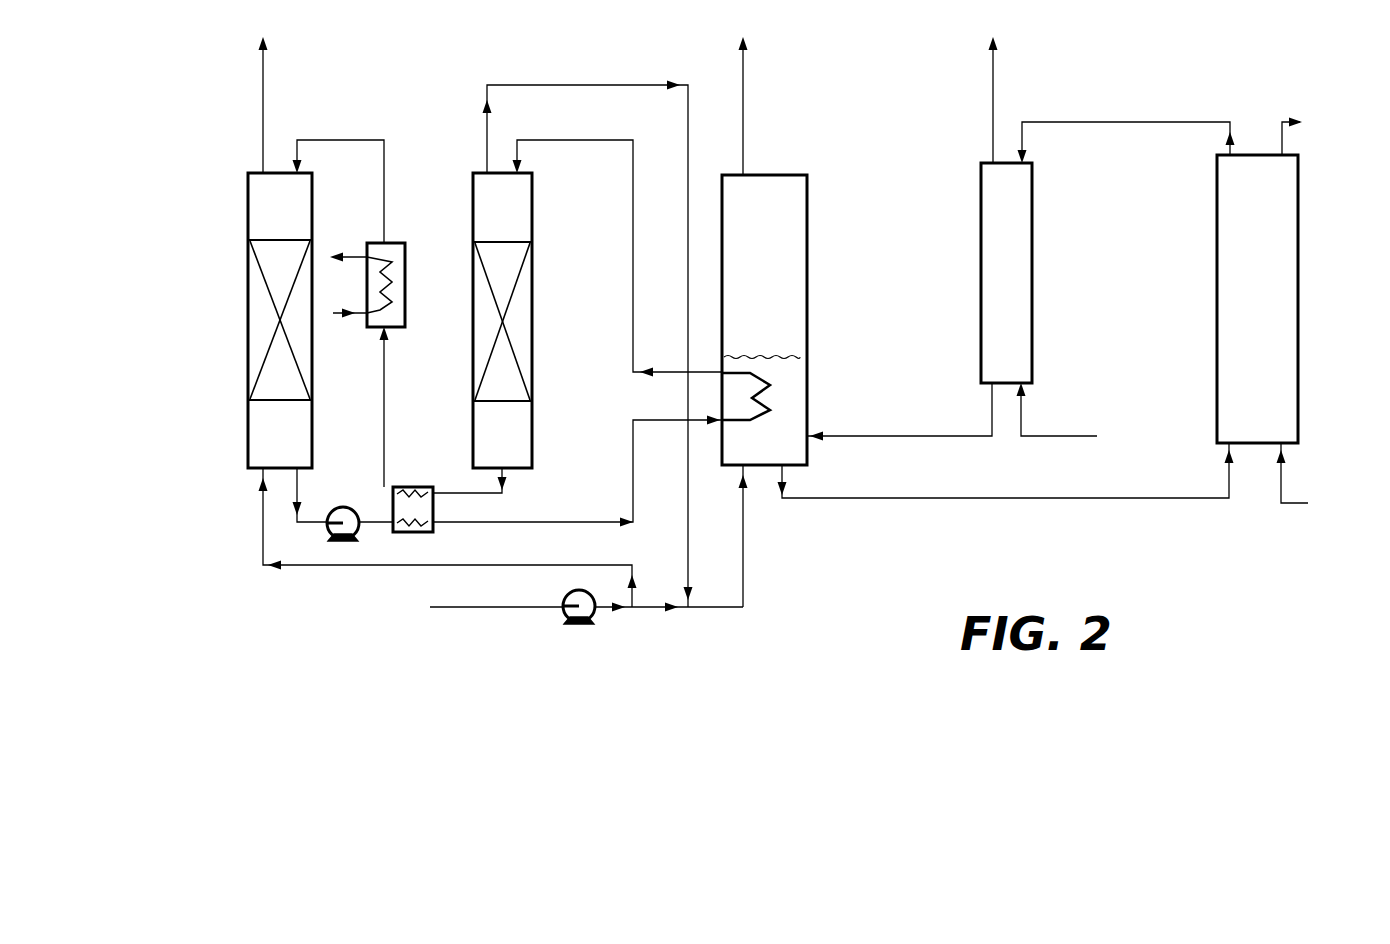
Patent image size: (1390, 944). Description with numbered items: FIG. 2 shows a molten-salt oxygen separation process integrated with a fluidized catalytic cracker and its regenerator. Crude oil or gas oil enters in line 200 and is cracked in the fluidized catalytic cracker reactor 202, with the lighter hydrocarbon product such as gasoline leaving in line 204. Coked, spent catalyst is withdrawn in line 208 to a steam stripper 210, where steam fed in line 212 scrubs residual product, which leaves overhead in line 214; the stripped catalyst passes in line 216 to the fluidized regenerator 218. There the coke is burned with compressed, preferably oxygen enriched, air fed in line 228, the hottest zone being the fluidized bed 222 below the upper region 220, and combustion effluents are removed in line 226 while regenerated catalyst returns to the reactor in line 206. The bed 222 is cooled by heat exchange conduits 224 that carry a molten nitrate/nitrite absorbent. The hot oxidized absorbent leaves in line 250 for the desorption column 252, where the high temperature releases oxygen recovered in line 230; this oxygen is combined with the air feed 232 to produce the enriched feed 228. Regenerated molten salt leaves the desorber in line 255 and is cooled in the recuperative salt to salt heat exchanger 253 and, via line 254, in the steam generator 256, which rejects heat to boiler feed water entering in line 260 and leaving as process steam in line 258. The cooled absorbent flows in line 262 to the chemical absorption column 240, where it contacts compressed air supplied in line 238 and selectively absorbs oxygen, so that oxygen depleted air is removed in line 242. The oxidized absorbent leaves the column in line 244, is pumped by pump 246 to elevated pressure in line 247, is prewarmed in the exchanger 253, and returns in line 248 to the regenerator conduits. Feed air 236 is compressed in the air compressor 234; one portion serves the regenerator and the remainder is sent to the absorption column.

The line 200 is at (1296, 512).
The fluidized catalytic cracker reactor 202 is at (1299, 252).
The line 204 is at (1288, 122).
The line 206 is at (855, 500).
The line 208 is at (1147, 120).
The steam stripper 210 is at (1035, 290).
The line 212 is at (1060, 430).
The line 214 is at (995, 112).
The line 216 is at (984, 442).
The fluidized regenerator 218 is at (808, 330).
The regenerator upper zone 220 is at (784, 291).
The fluidized bed 222 is at (784, 455).
The heat exchange conduits 224 is at (775, 416).
The line 226 is at (745, 120).
The line 228 is at (746, 570).
The line 230 is at (637, 90).
The air feed 232 is at (665, 610).
The air compressor 234 is at (596, 614).
The feed air 236 is at (516, 612).
The line 238 is at (392, 571).
The chemical absorption column 240 is at (247, 364).
The line 242 is at (265, 118).
The line 244 is at (300, 500).
The pump 246 is at (360, 530).
The line 247 is at (378, 519).
The line 248 is at (551, 522).
The line 250 is at (631, 298).
The desorption column 252 is at (534, 343).
The recuperative salt to salt heat exchanger 253 is at (433, 490).
The line 254 is at (389, 440).
The line 255 is at (478, 500).
The steam generator 256 is at (405, 291).
The line 258 is at (358, 257).
The line 260 is at (348, 320).
The line 262 is at (364, 140).